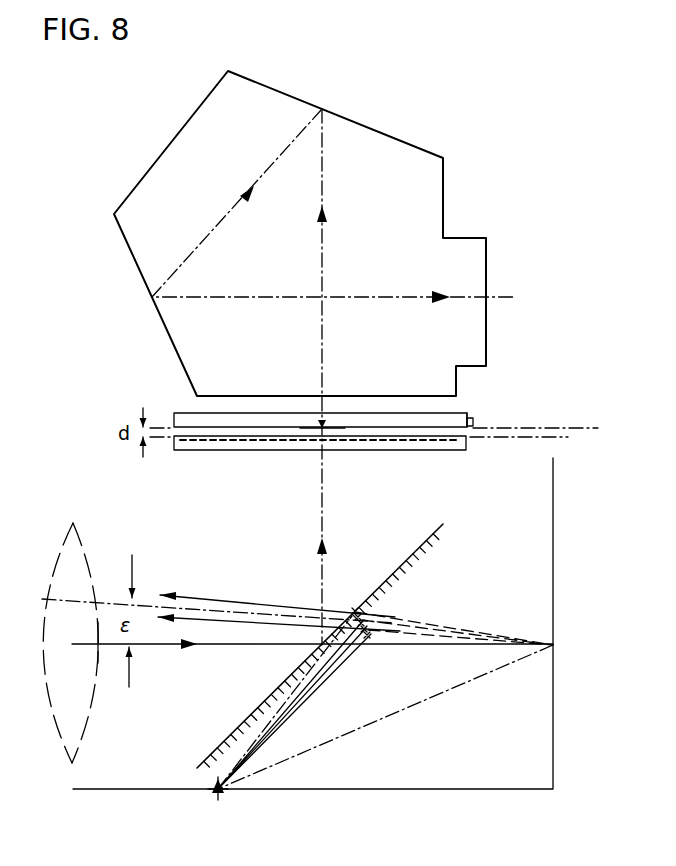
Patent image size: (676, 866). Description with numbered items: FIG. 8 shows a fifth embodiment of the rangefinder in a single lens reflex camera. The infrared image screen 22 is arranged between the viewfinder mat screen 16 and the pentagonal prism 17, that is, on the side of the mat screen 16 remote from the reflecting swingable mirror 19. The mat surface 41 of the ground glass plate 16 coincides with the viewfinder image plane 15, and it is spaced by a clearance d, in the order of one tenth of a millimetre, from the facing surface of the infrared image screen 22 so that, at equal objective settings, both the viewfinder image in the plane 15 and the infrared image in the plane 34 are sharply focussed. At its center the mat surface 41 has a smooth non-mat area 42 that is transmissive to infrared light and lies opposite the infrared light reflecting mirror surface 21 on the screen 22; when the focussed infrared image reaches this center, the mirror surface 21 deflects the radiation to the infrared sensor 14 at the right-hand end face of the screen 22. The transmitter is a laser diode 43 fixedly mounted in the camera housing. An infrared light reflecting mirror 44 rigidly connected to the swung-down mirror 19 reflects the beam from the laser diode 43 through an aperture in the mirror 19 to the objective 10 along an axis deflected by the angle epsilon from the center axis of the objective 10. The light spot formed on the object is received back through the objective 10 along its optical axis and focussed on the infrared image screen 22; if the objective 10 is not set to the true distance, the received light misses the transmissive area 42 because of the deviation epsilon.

The objective 10 is at (80, 538).
The infrared sensor 14 is at (473, 421).
The viewfinder image plane 15 is at (505, 438).
The viewfinder mat screen 16 is at (386, 450).
The pentagonal prism 17 is at (387, 157).
The reflecting swingable mirror 19 is at (430, 548).
The infrared light reflecting mirror surface 21 is at (320, 423).
The infrared image screen 22 is at (455, 422).
The infrared image plane 34 is at (575, 428).
The mat surface 41 is at (238, 441).
The non-mat area 42 is at (316, 437).
The laser diode 43 is at (225, 795).
The infrared light reflecting mirror 44 is at (358, 634).